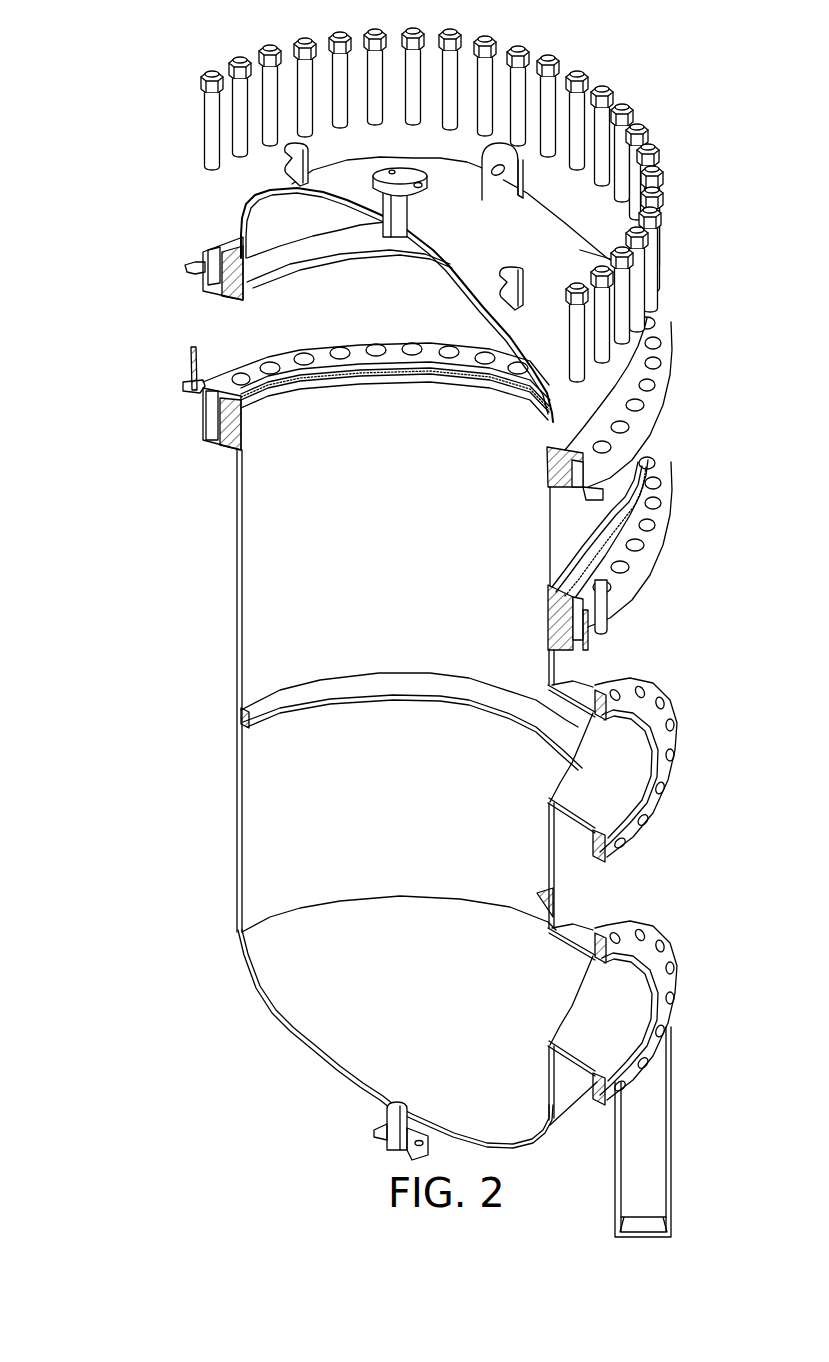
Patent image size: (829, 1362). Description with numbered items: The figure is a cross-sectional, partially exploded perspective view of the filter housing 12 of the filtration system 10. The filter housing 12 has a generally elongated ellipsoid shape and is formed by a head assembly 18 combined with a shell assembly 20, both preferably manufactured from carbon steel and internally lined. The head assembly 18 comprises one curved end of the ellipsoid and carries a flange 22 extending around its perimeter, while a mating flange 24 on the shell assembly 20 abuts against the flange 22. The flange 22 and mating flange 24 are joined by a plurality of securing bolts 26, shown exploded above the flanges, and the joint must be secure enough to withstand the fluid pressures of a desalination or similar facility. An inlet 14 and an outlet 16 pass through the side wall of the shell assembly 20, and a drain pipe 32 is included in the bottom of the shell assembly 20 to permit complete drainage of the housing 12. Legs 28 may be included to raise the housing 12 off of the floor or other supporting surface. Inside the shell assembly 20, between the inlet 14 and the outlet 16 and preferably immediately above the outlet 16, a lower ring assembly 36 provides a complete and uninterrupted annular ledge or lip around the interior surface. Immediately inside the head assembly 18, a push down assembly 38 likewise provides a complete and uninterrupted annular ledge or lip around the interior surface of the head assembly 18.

The filtration system 10 is at (88, 124).
The filter housing 12 is at (116, 300).
The inlet 14 is at (665, 710).
The outlet 16 is at (665, 953).
The head assembly 18 is at (242, 213).
The shell assembly 20 is at (237, 580).
The flange 22 is at (664, 397).
The mating flange 24 is at (667, 533).
The securing bolts 26 is at (239, 58).
The legs 28 is at (672, 1128).
The drain pipe 32 is at (374, 1130).
The lower ring assembly 36 is at (268, 710).
The push down assembly 38 is at (268, 270).